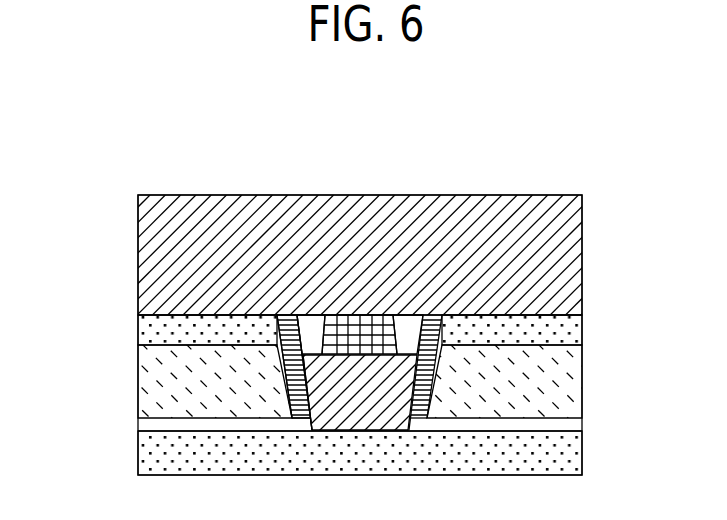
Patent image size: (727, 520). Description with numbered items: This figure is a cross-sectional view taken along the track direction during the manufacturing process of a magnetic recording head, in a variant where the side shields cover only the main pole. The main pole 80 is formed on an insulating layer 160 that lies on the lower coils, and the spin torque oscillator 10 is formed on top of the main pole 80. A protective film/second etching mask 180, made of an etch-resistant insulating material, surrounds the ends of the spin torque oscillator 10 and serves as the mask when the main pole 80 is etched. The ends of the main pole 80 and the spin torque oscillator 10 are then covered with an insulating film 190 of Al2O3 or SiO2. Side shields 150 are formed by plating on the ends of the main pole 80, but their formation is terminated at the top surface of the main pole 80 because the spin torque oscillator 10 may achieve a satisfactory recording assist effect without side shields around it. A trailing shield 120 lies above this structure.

The trailing shield 120 is at (150, 230).
The insulating layer 160 is at (152, 328).
The side shields 150 is at (568, 383).
The insulating film 190 is at (289, 328).
The main pole 80 is at (323, 378).
The spin torque oscillator 10 is at (347, 343).
The protective film/second etching mask 180 is at (405, 344).